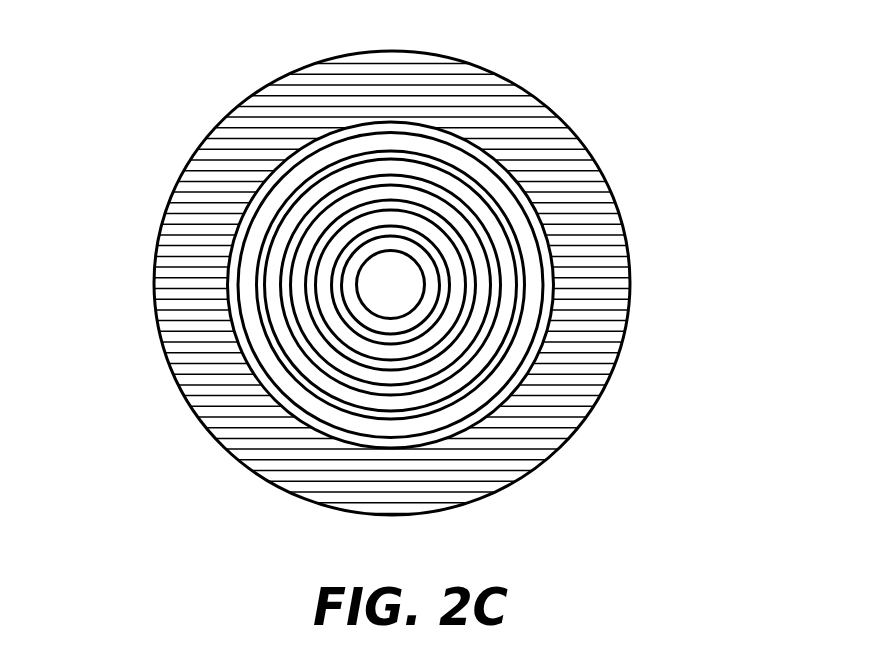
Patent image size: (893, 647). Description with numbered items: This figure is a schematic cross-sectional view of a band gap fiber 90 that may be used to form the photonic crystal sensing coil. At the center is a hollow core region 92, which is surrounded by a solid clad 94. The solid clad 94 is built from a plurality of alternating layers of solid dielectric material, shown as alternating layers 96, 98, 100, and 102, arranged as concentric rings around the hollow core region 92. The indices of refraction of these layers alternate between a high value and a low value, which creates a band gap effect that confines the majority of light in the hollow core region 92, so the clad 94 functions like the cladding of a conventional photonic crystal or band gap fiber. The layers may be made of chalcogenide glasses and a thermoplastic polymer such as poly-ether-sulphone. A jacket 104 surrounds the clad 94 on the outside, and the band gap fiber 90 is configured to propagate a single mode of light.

The band gap fiber 90 is at (96, 322).
The hollow core region 92 is at (390, 267).
The solid clad 94 is at (237, 243).
The alternating layer 96 is at (475, 300).
The alternating layer 98 is at (497, 260).
The alternating layer 100 is at (503, 210).
The alternating layer 102 is at (502, 163).
The jacket 104 is at (553, 457).